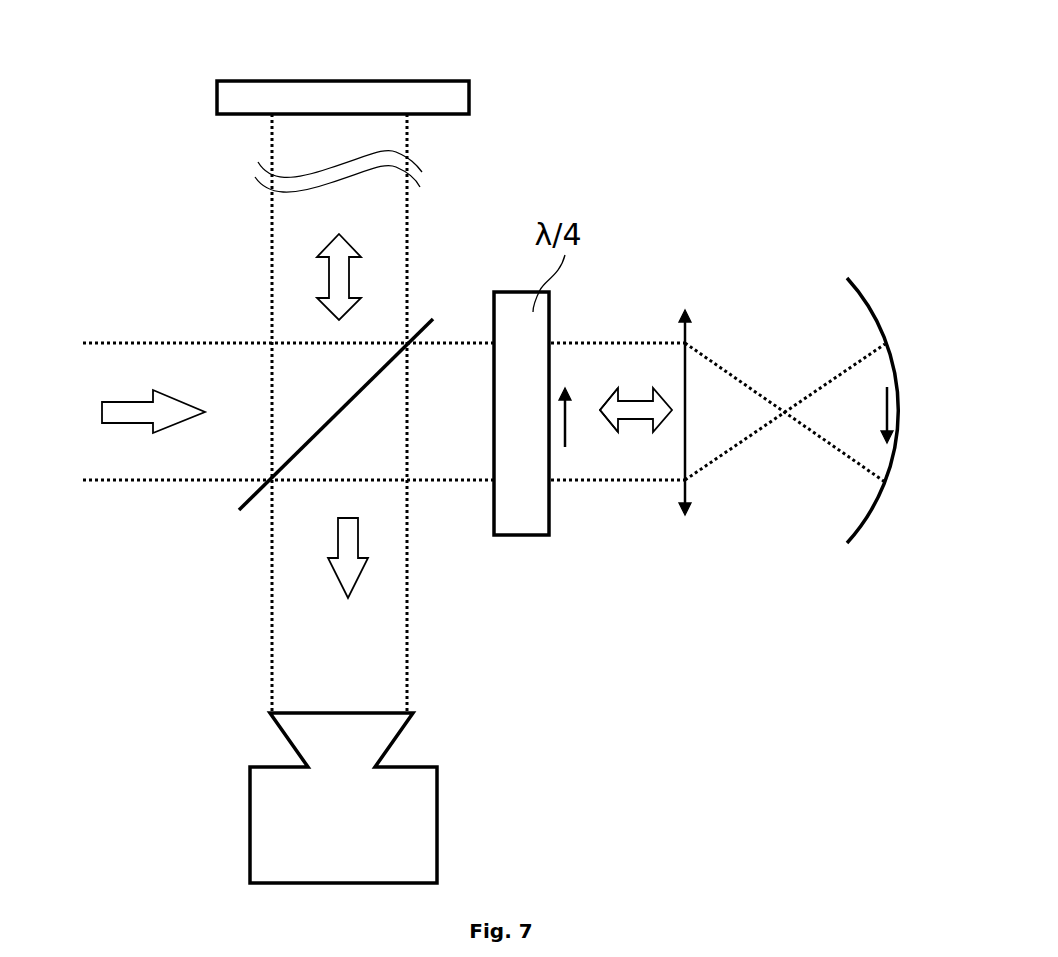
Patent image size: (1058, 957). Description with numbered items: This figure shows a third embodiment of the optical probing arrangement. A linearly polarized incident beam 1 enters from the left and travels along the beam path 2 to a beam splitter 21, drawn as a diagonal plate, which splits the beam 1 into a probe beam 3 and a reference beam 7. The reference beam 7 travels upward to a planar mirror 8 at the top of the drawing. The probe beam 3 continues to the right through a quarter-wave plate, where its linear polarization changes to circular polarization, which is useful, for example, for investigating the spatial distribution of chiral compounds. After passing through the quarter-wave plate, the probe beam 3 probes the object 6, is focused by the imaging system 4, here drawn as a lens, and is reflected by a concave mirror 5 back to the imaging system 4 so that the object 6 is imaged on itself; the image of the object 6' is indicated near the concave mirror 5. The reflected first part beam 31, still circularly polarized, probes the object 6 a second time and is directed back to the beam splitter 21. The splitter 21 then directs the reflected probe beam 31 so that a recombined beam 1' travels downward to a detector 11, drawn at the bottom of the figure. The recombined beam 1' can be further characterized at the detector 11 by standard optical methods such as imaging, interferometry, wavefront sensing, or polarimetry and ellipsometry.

The incident beam 1 is at (125, 353).
The recombined beam 1' is at (409, 564).
The beam path 2 is at (484, 413).
The beam splitter 21 is at (248, 498).
The probe beam 3 is at (655, 408).
The reflected first part beam 31 is at (604, 410).
The imaging system 4 is at (685, 345).
The concave mirror 5 is at (872, 315).
The object 6 is at (580, 365).
The image of an object 6' is at (917, 415).
The reference beam 7 is at (352, 280).
The planar mirror 8 is at (418, 82).
The detector 11 is at (420, 767).